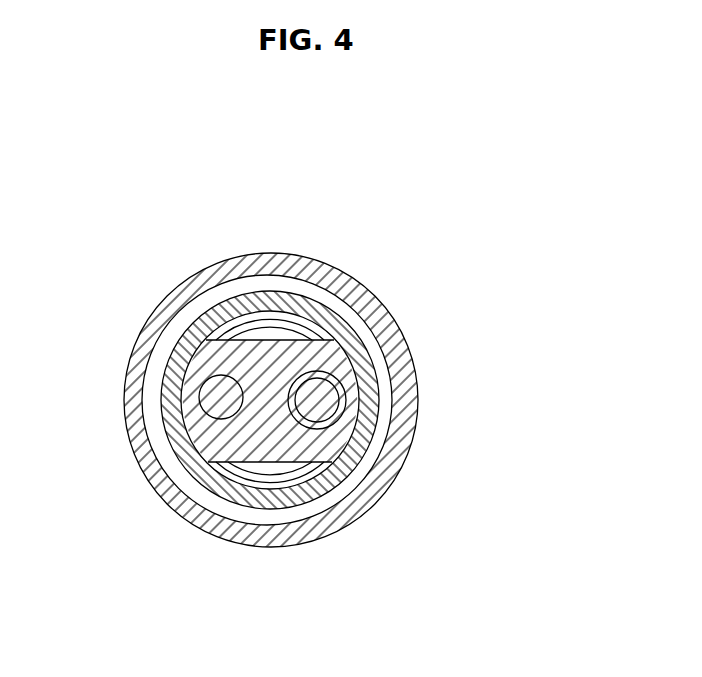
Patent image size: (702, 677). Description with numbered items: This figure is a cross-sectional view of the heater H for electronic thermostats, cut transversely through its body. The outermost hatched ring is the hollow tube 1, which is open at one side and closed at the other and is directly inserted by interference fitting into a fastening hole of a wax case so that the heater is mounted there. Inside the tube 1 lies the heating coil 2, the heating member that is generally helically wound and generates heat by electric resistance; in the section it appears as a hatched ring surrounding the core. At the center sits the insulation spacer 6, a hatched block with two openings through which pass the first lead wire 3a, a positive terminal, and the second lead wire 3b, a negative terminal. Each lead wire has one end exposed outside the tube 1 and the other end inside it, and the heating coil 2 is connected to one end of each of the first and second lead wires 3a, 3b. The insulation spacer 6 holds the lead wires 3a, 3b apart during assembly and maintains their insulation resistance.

The heater for electronic thermostats H is at (494, 234).
The hollow tube 1 is at (418, 398).
The heating coil 2 is at (300, 323).
The insulation spacer 6 is at (187, 378).
The first lead wire 3a is at (325, 397).
The second lead wire 3b is at (205, 393).